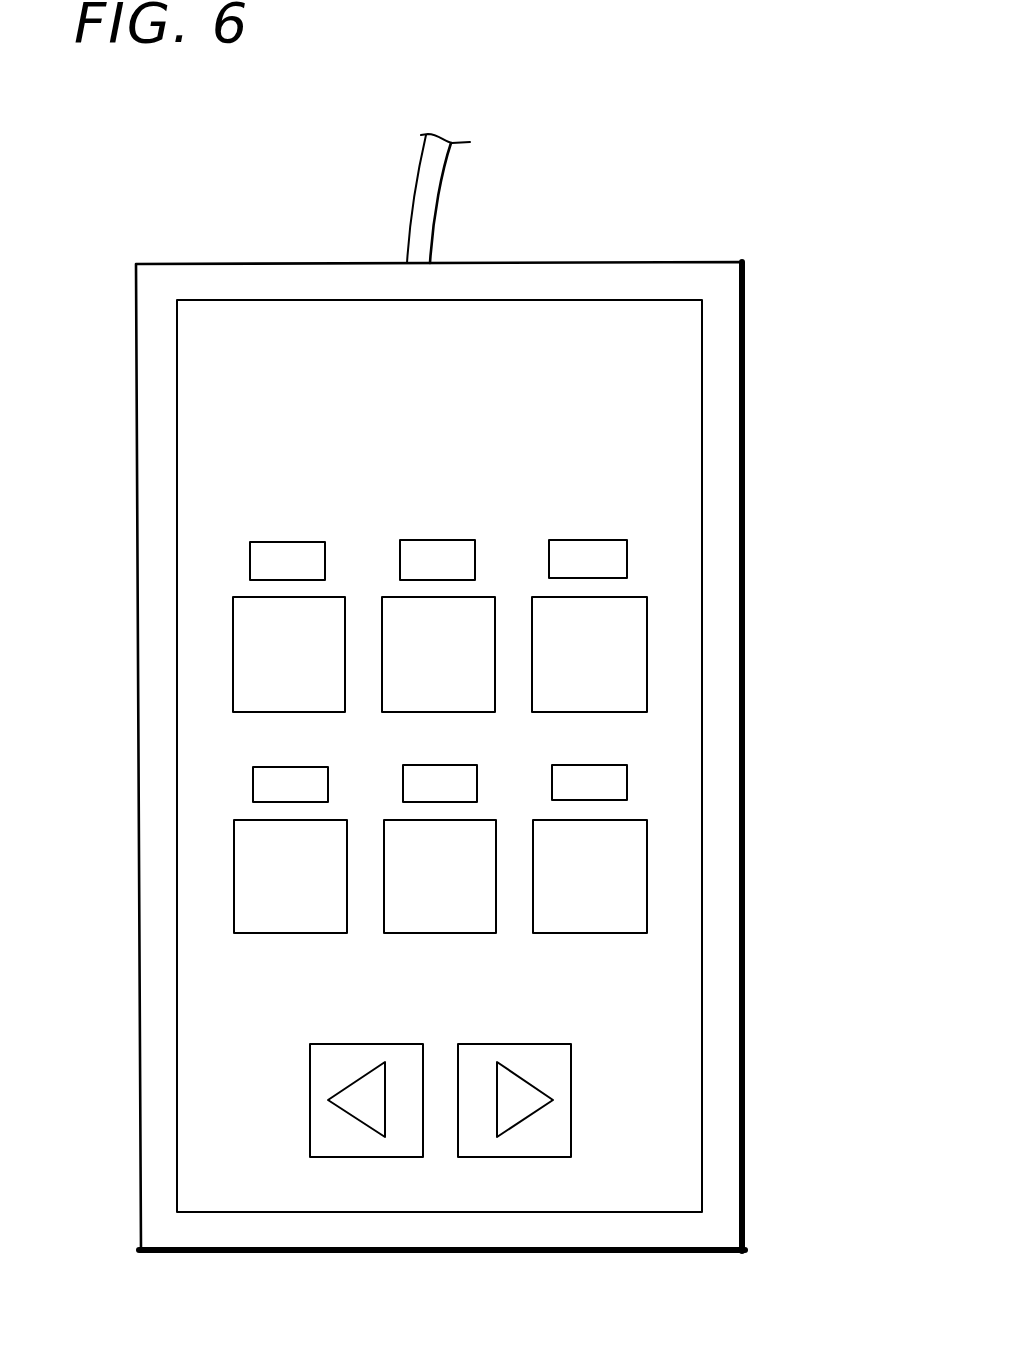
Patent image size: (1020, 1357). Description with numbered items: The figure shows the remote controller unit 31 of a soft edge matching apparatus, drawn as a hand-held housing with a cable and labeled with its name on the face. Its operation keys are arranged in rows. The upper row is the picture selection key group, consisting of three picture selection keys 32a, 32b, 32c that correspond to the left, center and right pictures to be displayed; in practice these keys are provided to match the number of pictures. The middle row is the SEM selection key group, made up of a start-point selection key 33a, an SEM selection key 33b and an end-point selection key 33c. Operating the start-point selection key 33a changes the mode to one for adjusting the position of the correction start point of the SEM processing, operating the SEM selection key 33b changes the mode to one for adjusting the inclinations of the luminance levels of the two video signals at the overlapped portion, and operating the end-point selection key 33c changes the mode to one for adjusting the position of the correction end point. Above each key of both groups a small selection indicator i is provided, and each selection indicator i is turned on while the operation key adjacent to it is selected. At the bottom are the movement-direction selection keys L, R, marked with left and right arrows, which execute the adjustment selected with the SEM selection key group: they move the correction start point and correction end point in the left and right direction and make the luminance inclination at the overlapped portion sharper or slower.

The remote controller unit 31 is at (805, 1156).
The picture selection key 32a is at (233, 656).
The picture selection key 32b is at (495, 696).
The picture selection key 32c is at (647, 648).
The start-point selection key 33a is at (234, 878).
The SEM selection key 33b is at (496, 913).
The end-point selection key 33c is at (647, 851).
The selection indicator i is at (325, 561).
The movement-direction selection key L is at (310, 1100).
The movement-direction selection key R is at (571, 1097).